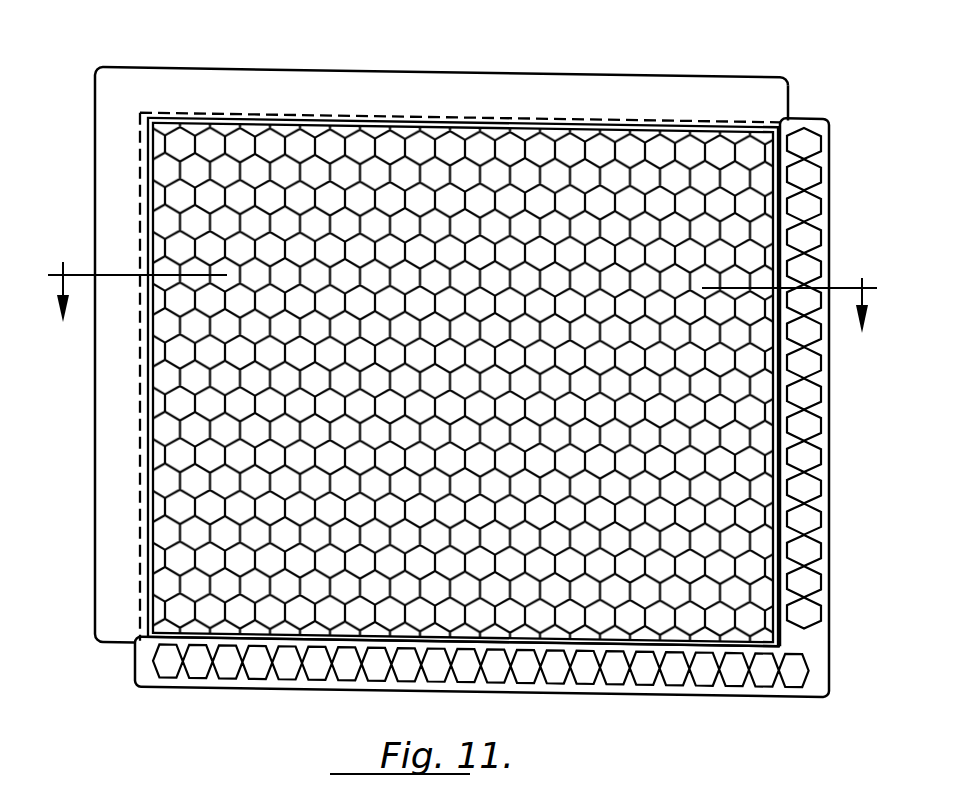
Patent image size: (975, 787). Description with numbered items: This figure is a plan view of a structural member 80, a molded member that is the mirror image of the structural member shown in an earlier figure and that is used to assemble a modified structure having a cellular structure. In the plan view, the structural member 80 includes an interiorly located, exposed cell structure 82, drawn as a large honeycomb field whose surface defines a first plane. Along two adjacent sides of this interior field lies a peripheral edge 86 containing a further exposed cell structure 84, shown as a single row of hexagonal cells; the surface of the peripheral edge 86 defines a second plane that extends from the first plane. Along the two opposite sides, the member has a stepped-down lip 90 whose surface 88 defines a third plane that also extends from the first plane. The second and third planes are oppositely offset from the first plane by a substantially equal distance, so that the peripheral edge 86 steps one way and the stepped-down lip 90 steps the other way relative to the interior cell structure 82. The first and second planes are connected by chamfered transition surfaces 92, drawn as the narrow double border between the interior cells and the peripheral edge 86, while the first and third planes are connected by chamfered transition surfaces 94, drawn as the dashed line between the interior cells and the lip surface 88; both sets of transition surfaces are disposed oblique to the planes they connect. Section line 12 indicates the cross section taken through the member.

The structural member 80 is at (122, 50).
The exposed cell structure 82 is at (183, 214).
The exposed cell structure 84 is at (815, 496).
The peripheral edge 86 is at (821, 120).
The surface 88 is at (678, 87).
The stepped-down lip 90 is at (790, 88).
The chamfered transition surfaces 92 is at (777, 417).
The chamfered transition surfaces 94 is at (253, 122).
The section line 12- 12 is at (466, 281).